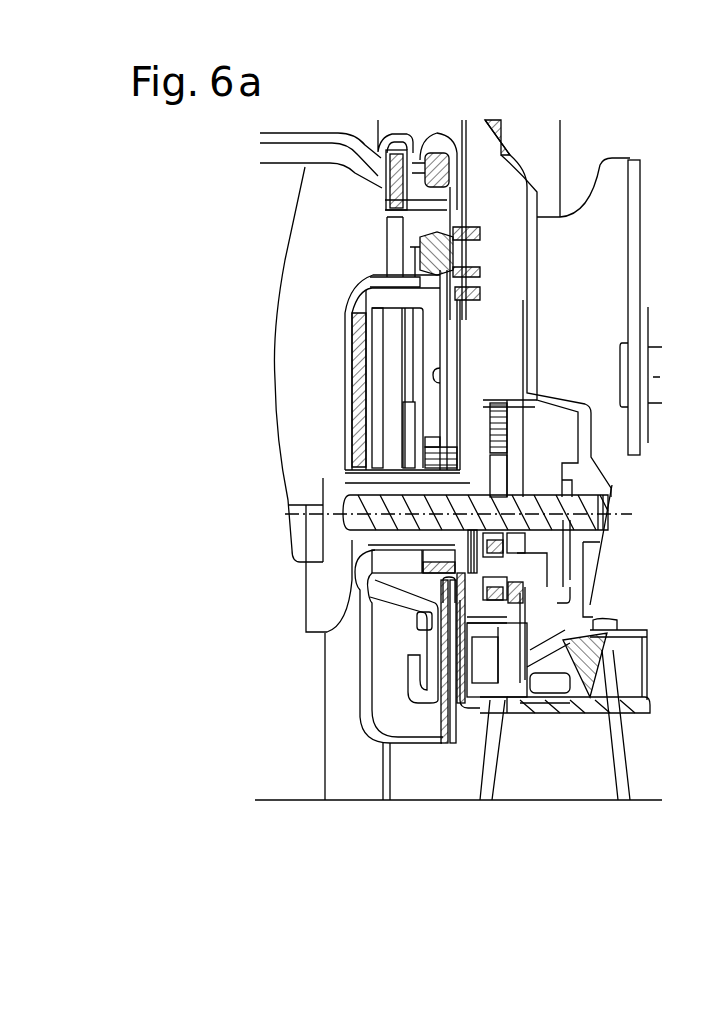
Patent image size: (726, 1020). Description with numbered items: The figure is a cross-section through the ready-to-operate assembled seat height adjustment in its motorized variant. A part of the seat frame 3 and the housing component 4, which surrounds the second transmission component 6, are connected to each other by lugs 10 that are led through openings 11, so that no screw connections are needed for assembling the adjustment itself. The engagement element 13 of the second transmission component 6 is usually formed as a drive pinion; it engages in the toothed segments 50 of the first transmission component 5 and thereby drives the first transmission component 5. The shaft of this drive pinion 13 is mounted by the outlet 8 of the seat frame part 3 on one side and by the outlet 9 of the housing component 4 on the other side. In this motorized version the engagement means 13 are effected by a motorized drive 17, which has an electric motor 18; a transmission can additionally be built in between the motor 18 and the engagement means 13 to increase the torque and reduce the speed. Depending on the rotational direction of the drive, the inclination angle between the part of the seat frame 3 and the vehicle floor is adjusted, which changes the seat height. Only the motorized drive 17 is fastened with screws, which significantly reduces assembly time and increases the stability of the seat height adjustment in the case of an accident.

The part of the seat frame 3 is at (460, 335).
The housing component 4 is at (350, 572).
The first transmission component 5 is at (397, 370).
The second transmission component 6 is at (458, 503).
The outlet 8 is at (525, 511).
The outlet 9 is at (292, 527).
The lugs 10 is at (455, 241).
The openings 11 is at (450, 278).
The engagement element 13 is at (323, 480).
The motorized drive 17 is at (605, 600).
The electric motor 18 is at (458, 725).
The toothed segments 50 is at (373, 457).